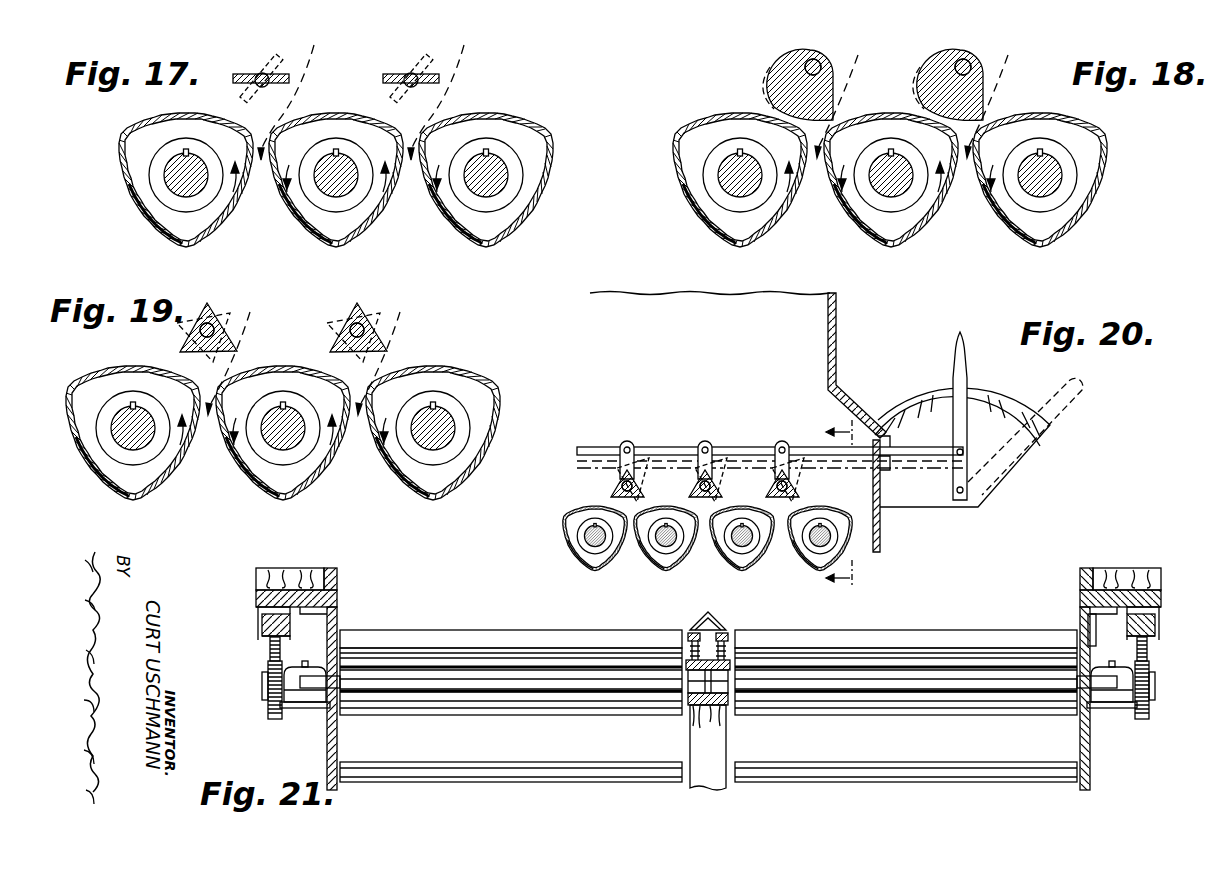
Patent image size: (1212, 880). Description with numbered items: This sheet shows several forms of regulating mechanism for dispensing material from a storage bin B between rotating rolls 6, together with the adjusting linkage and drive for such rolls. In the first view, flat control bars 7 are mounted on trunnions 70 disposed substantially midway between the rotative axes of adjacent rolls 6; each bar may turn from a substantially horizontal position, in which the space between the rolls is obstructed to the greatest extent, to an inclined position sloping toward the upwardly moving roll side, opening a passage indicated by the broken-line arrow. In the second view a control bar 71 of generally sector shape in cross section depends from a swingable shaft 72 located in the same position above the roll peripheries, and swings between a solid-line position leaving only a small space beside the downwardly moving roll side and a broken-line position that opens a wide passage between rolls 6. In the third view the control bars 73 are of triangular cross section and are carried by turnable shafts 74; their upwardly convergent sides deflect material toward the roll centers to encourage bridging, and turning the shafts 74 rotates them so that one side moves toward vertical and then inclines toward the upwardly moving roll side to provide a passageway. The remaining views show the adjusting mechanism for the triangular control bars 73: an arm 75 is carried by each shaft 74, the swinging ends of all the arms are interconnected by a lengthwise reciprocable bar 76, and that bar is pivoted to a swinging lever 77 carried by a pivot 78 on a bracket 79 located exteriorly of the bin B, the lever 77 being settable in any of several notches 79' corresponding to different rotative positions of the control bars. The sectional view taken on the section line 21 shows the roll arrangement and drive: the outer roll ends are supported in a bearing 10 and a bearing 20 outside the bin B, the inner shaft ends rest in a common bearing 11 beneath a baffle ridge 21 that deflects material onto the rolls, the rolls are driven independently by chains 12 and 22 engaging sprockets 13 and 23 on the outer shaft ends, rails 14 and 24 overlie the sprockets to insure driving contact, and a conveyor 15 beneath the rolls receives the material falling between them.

In FIG. 17, the rolls 6 is at (137, 127).
In FIG. 18, the rolls 6 is at (770, 236).
In FIG. 19, the rolls 6 is at (150, 488).
In FIG. 20, the rolls 6 is at (603, 565).
In FIG. 21, the rolls 6 is at (562, 706).
In FIG. 17, the control bars 7 is at (238, 73).
In FIG. 17, the trunnions 70 is at (262, 72).
In FIG. 18, the control bar 71 is at (836, 100).
In FIG. 18, the shaft 72 is at (806, 62).
In FIG. 19, the control bars 73 is at (212, 306).
In FIG. 21, the control bars 73 is at (476, 630).
In FIG. 19, the shafts 74 is at (200, 333).
In FIG. 20, the shafts 74 is at (615, 488).
In FIG. 20, the arm 75 is at (620, 458).
In FIG. 21, the arm 75 is at (1097, 636).
In FIG. 20, the reciprocable bar 76 is at (664, 447).
In FIG. 20, the lever 77 is at (952, 430).
In FIG. 20, the pivot 78 is at (958, 494).
In FIG. 20, the bracket 79 is at (968, 447).
In FIG. 20, the notches 79' is at (1025, 419).
In FIG. 20, the bin B is at (840, 348).
In FIG. 21, the bin B is at (340, 580).
In FIG. 21, the bearing 10 is at (306, 702).
In FIG. 21, the common bearing 11 is at (730, 703).
In FIG. 21, the chain 12 is at (268, 648).
In FIG. 21, the sprocket 13 is at (266, 700).
In FIG. 21, the rail 14 is at (260, 624).
In FIG. 21, the conveyor 15 is at (464, 767).
In FIG. 21, the bearing 20 is at (1108, 708).
In FIG. 20, the baffle ridge 21 is at (841, 503).
In FIG. 21, the baffle ridge 21 is at (714, 616).
In FIG. 21, the chain 22 is at (1148, 652).
In FIG. 21, the sprocket 23 is at (1150, 705).
In FIG. 21, the rail 24 is at (1156, 628).